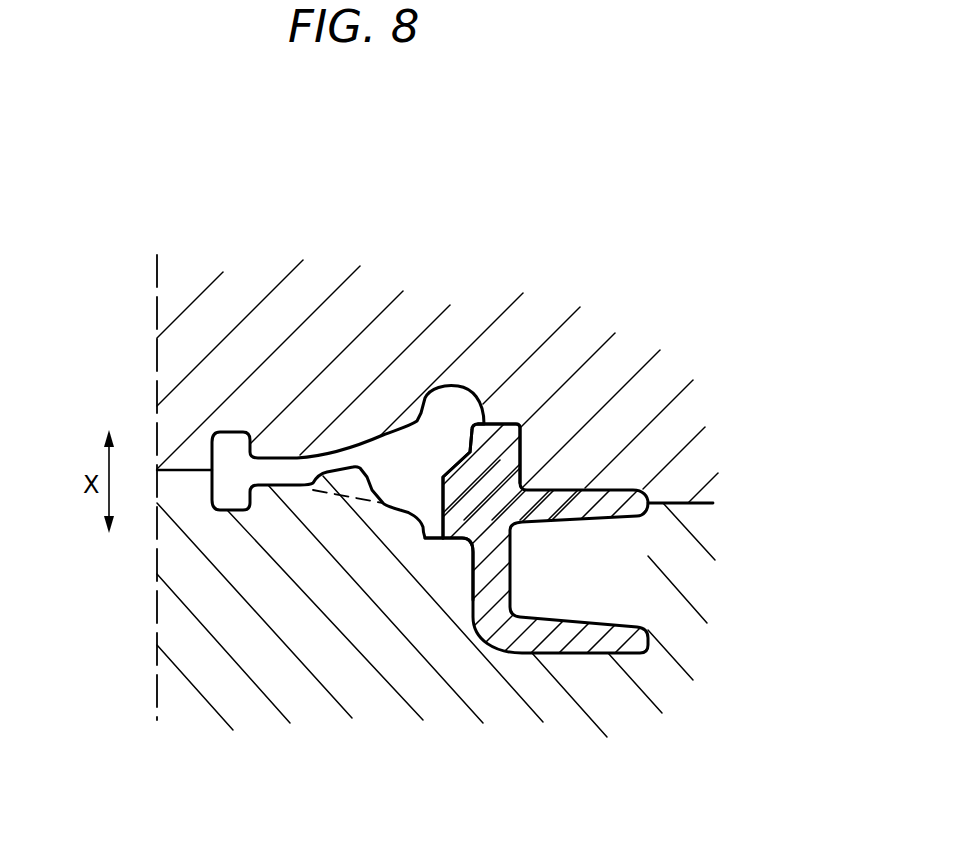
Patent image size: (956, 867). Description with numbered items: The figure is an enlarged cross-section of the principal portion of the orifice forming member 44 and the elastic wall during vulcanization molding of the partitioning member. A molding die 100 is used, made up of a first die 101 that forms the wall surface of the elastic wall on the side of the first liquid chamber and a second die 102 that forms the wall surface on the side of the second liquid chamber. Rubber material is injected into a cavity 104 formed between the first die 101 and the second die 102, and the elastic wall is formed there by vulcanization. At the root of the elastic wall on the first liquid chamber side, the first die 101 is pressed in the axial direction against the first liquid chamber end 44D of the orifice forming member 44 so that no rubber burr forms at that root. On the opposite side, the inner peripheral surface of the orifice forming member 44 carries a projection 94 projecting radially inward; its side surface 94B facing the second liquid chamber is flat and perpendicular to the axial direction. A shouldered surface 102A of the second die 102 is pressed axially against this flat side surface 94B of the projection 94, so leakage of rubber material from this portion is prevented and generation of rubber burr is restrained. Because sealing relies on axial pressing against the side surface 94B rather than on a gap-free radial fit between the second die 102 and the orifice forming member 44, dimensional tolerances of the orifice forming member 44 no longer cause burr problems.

The molding die 100 is at (383, 198).
The first die 101 is at (165, 362).
The second die 102 is at (175, 615).
The shouldered surface 102A is at (430, 542).
The cavity 104 is at (287, 478).
The projection 94 is at (457, 487).
The side surface 94B is at (455, 540).
The orifice forming member 44 is at (632, 485).
The first liquid chamber end 44D is at (520, 427).